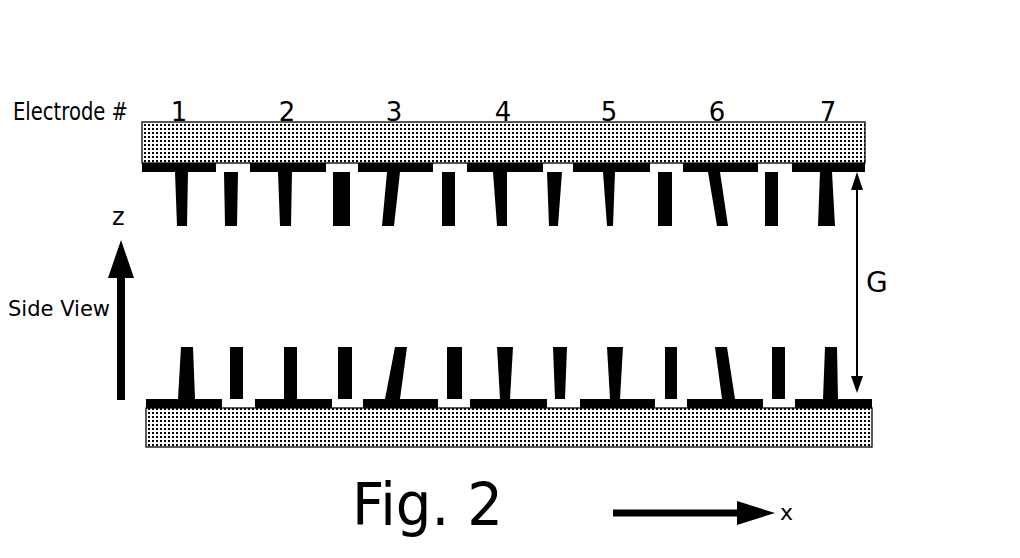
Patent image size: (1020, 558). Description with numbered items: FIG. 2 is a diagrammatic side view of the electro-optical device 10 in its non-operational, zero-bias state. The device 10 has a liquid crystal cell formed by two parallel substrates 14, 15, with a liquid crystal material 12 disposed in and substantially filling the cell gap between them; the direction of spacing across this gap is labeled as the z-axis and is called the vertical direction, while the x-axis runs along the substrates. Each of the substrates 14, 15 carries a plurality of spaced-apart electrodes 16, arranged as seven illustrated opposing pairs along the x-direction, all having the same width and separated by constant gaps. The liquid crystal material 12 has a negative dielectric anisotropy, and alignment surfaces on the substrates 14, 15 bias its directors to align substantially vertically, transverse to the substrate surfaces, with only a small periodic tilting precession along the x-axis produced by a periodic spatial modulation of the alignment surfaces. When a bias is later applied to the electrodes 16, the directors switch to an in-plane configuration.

The electro-optical device 10 is at (660, 78).
The liquid crystal material 12 is at (512, 297).
The substrate 14 is at (163, 138).
The substrate 15 is at (162, 427).
The electrodes 16 is at (385, 162).